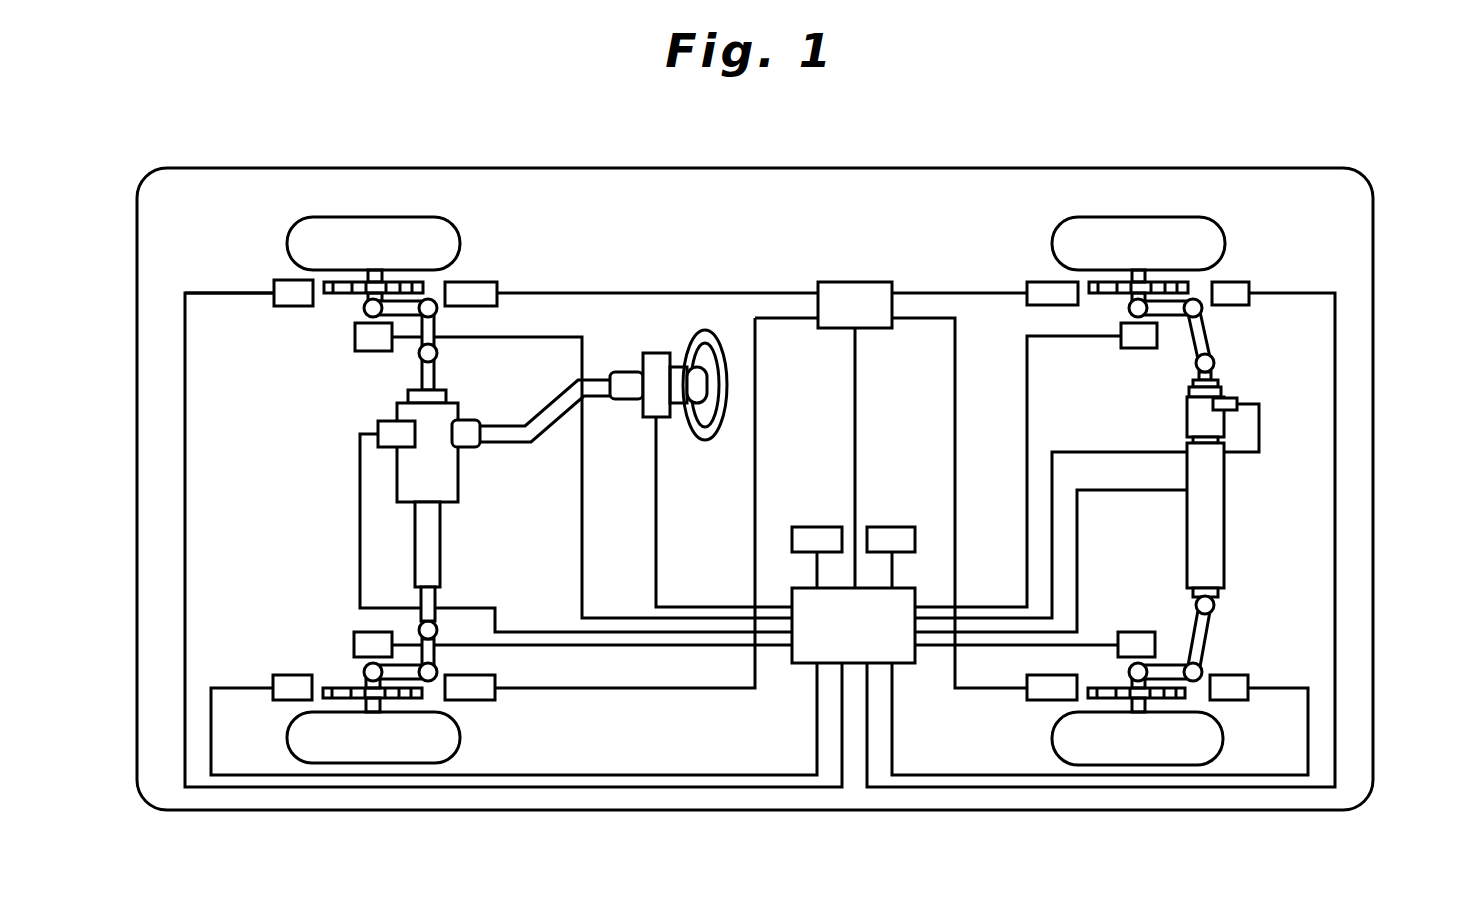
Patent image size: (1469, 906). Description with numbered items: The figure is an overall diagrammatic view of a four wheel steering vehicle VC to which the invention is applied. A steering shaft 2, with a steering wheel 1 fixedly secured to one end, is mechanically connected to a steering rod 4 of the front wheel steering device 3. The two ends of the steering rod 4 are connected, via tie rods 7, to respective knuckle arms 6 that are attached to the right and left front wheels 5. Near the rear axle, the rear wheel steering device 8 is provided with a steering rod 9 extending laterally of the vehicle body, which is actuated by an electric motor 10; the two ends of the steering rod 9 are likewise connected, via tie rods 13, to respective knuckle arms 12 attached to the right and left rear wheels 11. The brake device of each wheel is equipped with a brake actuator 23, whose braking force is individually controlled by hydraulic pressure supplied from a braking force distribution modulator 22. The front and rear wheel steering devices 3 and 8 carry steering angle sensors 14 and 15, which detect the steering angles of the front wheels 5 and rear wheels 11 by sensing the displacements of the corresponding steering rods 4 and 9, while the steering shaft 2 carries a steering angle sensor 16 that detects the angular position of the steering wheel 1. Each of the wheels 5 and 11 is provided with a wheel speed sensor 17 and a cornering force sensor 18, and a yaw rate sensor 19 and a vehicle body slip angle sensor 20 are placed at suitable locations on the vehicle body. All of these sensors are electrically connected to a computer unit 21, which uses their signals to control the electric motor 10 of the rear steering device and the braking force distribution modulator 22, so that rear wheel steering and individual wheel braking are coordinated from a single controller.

The steering wheel 1 is at (716, 430).
The steering shaft 2 is at (531, 444).
The front wheel steering device 3 is at (386, 407).
The steering rod 4 is at (440, 537).
The front wheels 5 is at (287, 243).
The knuckle arms 6 is at (398, 303).
The tie rods 7 is at (435, 323).
The rear wheel steering device 8 is at (1214, 474).
The steering rod 9 is at (1219, 386).
The electric motor 10 is at (1224, 545).
The rear wheels 11 is at (1225, 237).
The knuckle arms 12 is at (1173, 318).
The tie rods 13 is at (1206, 343).
The steering angle sensor 14 is at (387, 448).
The steering angle sensor 15 is at (1213, 405).
The steering angle sensor 16 is at (657, 353).
The wheel speed sensor 17 is at (295, 306).
The cornering force sensor 18 is at (355, 333).
The yaw rate sensor 19 is at (822, 527).
The vehicle body slip angle sensor 20 is at (894, 527).
The computer unit 21 is at (918, 662).
The braking force distribution modulator 22 is at (855, 282).
The brake actuator 23 is at (485, 282).
The four wheel steering vehicle VC is at (1373, 563).